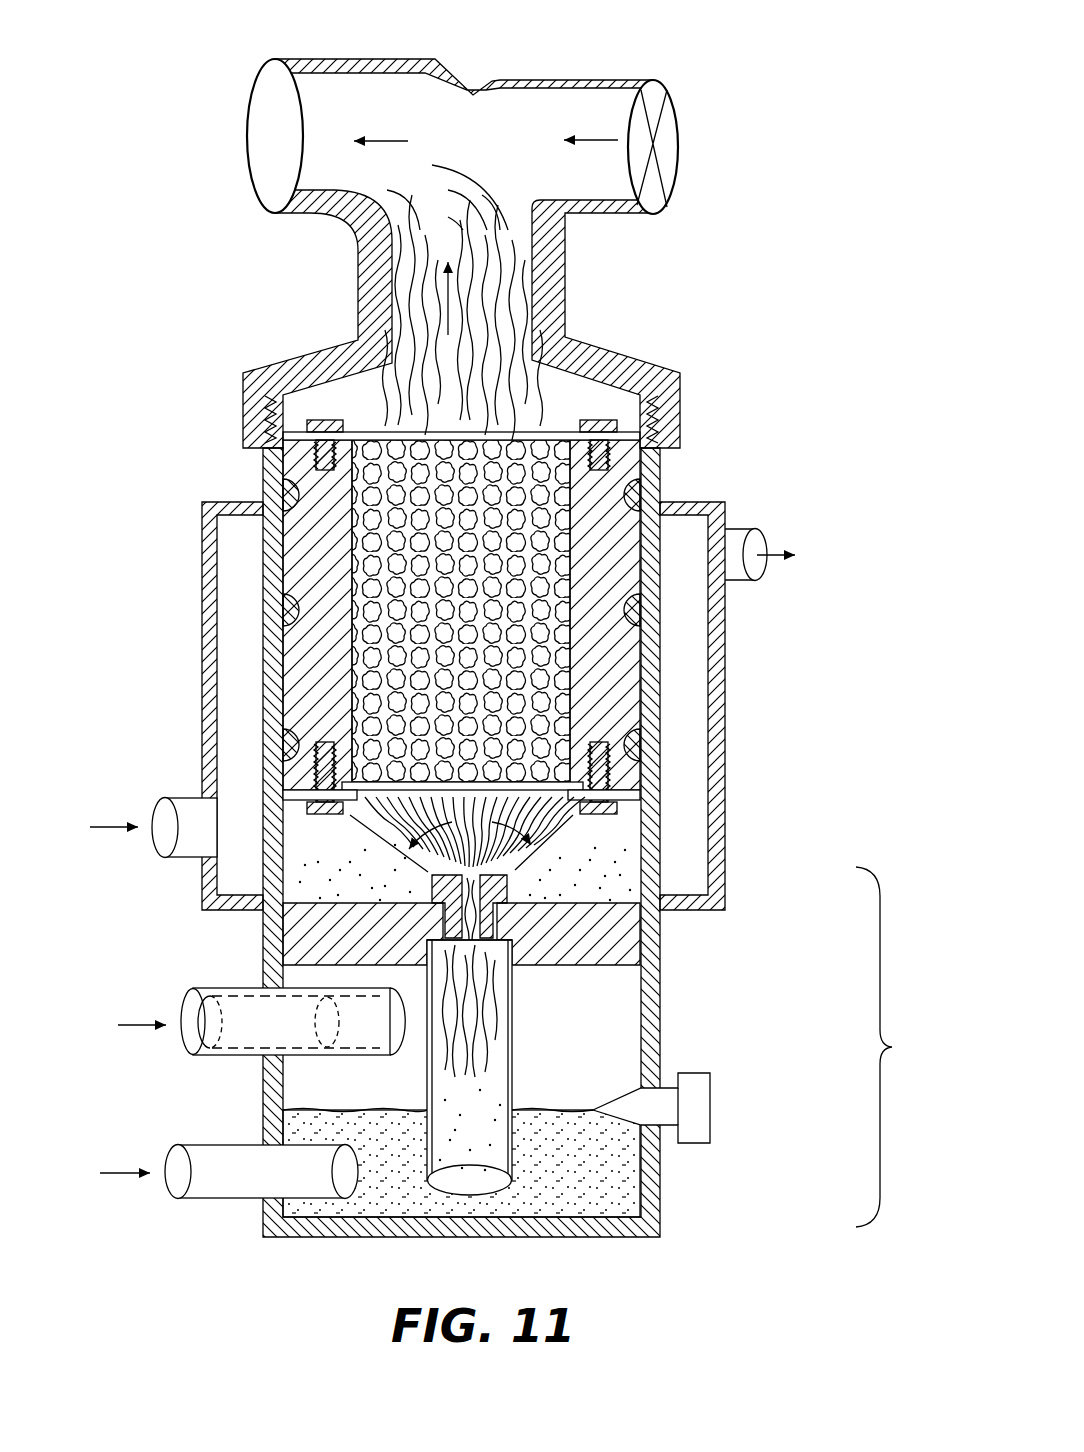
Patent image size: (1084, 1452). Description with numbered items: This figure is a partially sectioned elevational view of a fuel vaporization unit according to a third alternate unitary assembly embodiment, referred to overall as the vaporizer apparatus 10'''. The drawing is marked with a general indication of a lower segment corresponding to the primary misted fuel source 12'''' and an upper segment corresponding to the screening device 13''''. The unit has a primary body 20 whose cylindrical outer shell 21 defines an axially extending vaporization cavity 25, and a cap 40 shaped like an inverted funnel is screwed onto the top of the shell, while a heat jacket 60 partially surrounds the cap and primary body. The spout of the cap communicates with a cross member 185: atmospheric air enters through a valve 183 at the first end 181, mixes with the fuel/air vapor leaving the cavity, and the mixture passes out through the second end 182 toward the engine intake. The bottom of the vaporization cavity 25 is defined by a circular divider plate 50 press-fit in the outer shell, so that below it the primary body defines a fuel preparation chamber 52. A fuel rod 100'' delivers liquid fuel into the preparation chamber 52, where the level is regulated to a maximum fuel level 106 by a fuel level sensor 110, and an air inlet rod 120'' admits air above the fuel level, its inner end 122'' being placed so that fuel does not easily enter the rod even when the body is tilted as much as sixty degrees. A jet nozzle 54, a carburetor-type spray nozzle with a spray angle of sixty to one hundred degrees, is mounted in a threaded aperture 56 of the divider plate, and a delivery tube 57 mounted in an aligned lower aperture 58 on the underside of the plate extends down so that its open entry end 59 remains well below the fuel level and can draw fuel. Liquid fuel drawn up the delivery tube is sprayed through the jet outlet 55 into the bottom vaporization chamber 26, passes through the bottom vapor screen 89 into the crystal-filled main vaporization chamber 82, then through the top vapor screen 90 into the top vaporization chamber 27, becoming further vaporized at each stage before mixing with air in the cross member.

The vaporizer apparatus 10''' is at (608, 225).
The primary misted fuel source 12'''' is at (906, 1047).
The screening device 13'''' is at (634, 617).
The primary body 20 is at (258, 470).
The cylindrical outer shell 21 is at (652, 476).
The vaporization cavity 25 is at (430, 424).
The bottom vaporization chamber 26 is at (352, 827).
The top vaporization chamber 27 is at (478, 388).
The cap 40 is at (350, 290).
The divider plate 50 is at (575, 990).
The fuel preparation chamber 52 is at (603, 1052).
The jet nozzle 54 is at (470, 876).
The jet outlet 55 is at (494, 936).
The threaded aperture 56 is at (514, 962).
The delivery tube 57 is at (518, 1030).
The lower aperture 58 is at (515, 968).
The open entry end 59 is at (499, 1192).
The heat jacket 60 is at (732, 648).
The main vaporization chamber 82 is at (527, 572).
The bottom vapor screen 89 is at (545, 790).
The top vapor screen 90 is at (548, 428).
The fuel rod 100'' is at (229, 1204).
The maximum fuel level 106 is at (315, 1112).
The fuel level sensor 110 is at (695, 1112).
The air inlet rod 120'' is at (255, 1000).
The inner end 122'' is at (293, 988).
The first end 181 is at (657, 202).
The second end 182 is at (271, 60).
The valve 183 is at (677, 132).
The cross member 185 is at (486, 72).